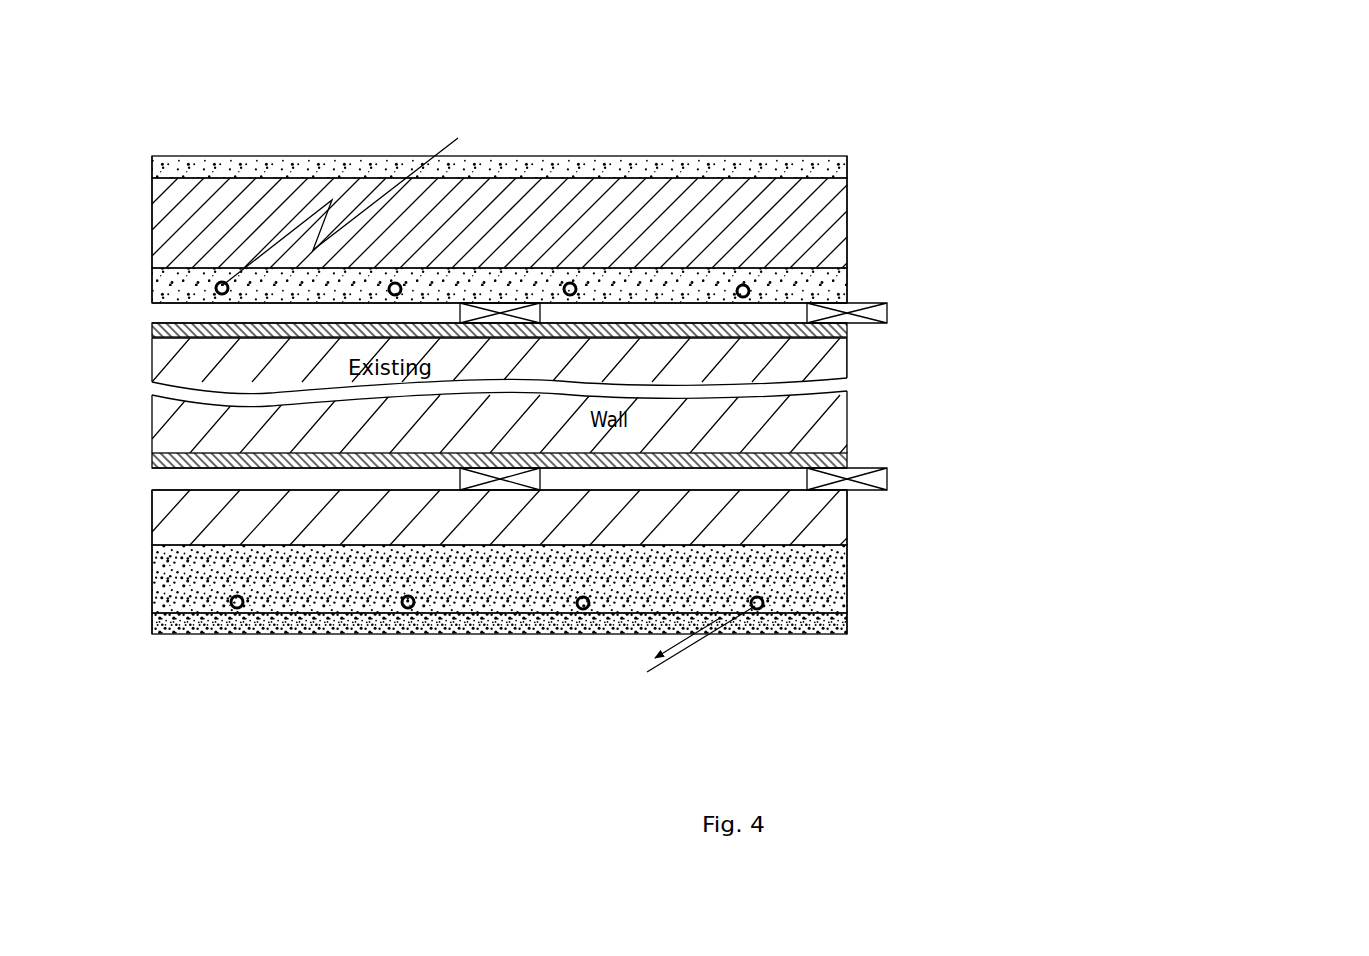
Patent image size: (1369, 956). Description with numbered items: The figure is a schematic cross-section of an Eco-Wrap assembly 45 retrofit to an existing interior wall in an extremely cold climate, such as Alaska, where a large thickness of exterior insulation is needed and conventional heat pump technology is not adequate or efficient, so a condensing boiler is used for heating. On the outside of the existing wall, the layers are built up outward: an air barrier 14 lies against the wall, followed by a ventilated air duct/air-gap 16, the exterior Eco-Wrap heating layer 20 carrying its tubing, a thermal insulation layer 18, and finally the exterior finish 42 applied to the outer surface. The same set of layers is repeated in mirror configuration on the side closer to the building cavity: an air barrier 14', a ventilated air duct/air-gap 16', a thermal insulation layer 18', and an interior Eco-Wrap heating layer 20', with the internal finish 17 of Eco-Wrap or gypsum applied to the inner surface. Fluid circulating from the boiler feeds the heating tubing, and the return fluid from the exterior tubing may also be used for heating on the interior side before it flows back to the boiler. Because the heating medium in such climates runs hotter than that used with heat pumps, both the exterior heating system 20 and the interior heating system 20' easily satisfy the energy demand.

The assembly 45 is at (887, 92).
The exterior finish 42 is at (805, 165).
The thermal insulation layer 18 is at (716, 222).
The exterior heating system 20 is at (637, 210).
The ventilated air duct/air-gap 16 is at (731, 302).
The air barrier 14 is at (635, 345).
The air barrier 14' is at (641, 438).
The ventilated air duct/air-gap 16' is at (735, 477).
The thermal insulation layer 18' is at (721, 519).
The interior heating system 20' is at (646, 613).
The internal finish 17 is at (798, 625).